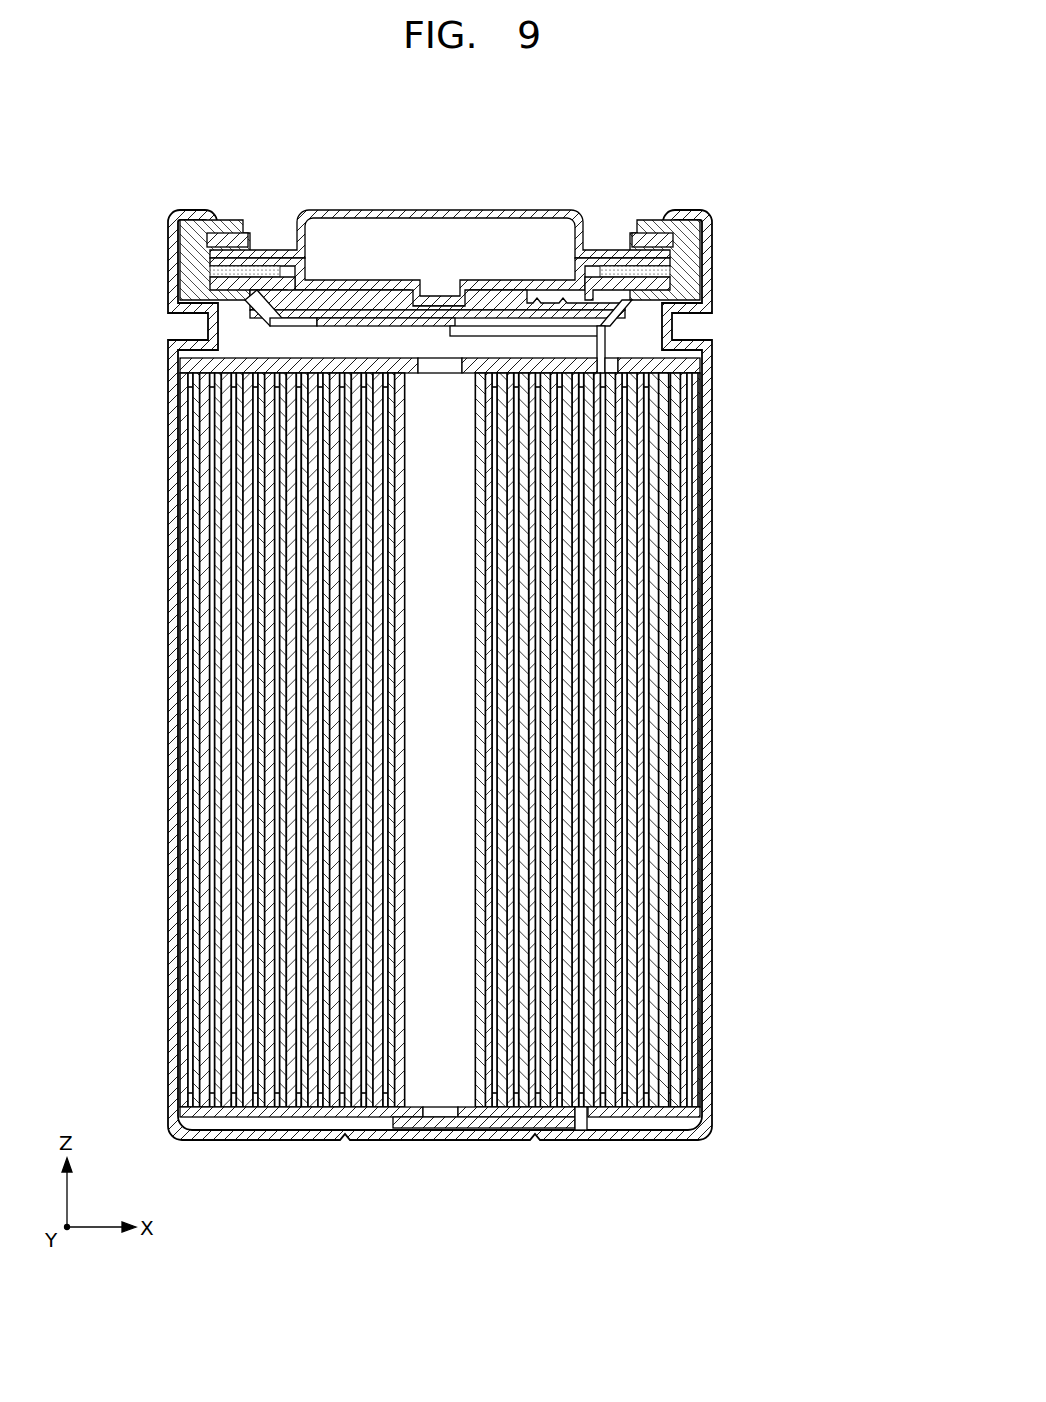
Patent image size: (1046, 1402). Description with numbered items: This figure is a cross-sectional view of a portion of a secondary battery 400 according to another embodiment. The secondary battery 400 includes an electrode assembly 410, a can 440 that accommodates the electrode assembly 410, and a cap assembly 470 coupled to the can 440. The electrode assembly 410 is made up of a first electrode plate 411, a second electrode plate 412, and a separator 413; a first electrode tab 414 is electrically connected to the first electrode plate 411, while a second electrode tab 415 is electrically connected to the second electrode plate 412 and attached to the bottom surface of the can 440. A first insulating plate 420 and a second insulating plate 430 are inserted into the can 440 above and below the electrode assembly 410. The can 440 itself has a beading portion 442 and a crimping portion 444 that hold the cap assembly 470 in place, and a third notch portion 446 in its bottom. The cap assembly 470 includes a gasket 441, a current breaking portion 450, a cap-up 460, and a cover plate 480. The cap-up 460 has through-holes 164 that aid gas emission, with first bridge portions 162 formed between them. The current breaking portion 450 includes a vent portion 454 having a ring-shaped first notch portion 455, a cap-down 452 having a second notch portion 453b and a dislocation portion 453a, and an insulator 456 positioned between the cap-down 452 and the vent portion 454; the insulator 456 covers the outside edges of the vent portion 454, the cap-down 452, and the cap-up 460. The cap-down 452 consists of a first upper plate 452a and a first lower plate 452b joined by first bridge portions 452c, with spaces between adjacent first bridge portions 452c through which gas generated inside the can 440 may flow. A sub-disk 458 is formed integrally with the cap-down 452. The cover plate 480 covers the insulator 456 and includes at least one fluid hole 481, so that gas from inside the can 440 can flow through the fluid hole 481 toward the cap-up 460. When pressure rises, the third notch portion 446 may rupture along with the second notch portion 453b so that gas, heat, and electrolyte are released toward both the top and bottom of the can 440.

The secondary battery 400 is at (790, 142).
The electrode assembly 410 is at (785, 432).
The first electrode plate 411 is at (685, 442).
The second electrode plate 412 is at (642, 542).
The separator 413 is at (657, 480).
The first electrode tab 414 is at (605, 347).
The second electrode tab 415 is at (437, 1130).
The first insulating plate 420 is at (688, 366).
The second insulating plate 430 is at (695, 1111).
The can 440 is at (724, 744).
The gasket 441 is at (187, 278).
The beading portion 442 is at (176, 326).
The crimping portion 444 is at (207, 214).
The third notch portion 446 is at (538, 1142).
The current breaking portion 450 is at (425, 270).
The cap-down 452 is at (790, 257).
The first upper plate 452a is at (672, 284).
The first lower plate 452b is at (634, 313).
The first bridge portions 452c is at (615, 297).
The dislocation portion 453a is at (538, 303).
The second notch portion 453b is at (565, 303).
The vent portion 454 is at (662, 262).
The first notch portion 455 is at (553, 287).
The insulator 456 is at (668, 272).
The sub-disk 458 is at (447, 310).
The cap-up 460 is at (446, 210).
The first bridge portions 162 is at (293, 222).
The through-holes 164 is at (585, 213).
The cap assembly 470 is at (622, 180).
The cover plate 480 is at (200, 264).
The fluid hole 481 is at (290, 322).